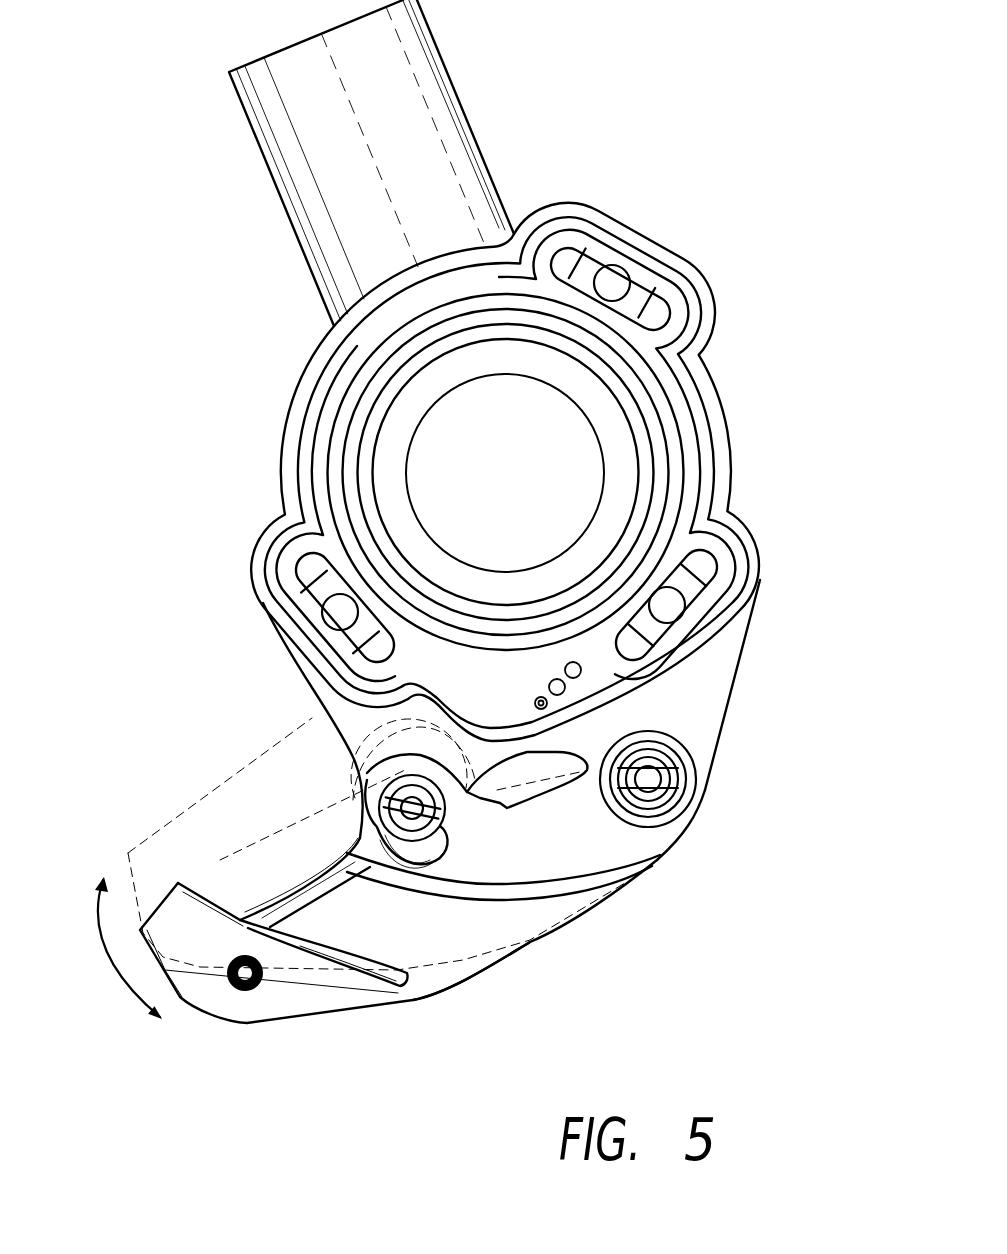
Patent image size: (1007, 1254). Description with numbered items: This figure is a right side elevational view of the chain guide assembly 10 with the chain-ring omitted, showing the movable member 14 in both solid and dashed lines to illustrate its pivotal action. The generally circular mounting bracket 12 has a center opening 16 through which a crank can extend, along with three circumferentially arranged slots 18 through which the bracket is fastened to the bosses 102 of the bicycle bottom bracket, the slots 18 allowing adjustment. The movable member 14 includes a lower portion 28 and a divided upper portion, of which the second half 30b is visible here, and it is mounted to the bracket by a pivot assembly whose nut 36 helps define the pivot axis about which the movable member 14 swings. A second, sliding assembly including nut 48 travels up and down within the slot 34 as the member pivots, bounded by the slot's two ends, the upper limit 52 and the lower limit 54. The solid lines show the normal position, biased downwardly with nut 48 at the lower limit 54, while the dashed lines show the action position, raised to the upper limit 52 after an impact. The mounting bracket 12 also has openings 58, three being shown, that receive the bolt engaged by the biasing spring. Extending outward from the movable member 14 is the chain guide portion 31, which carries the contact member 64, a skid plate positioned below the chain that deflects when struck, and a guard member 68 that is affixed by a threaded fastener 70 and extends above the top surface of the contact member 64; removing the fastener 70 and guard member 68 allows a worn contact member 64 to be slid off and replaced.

The chain guide assembly 10 is at (158, 745).
The mounting bracket 12 is at (693, 432).
The movable member 14 is at (600, 910).
The center opening 16 is at (541, 489).
The slots 18 is at (303, 570).
The lower portion 28 is at (535, 950).
The second half of upper portion 30b is at (678, 730).
The chain guide portion 31 is at (150, 1070).
The slot 34 is at (430, 848).
The nut 36 is at (680, 777).
The nut 48 is at (388, 822).
The upper limit 52 is at (418, 870).
The lower limit 54 is at (367, 773).
The opening 58 is at (540, 703).
The contact member 64 is at (260, 915).
The guard member 68 is at (178, 895).
The threaded fastener 70 is at (245, 988).
The bosses 102 is at (323, 594).